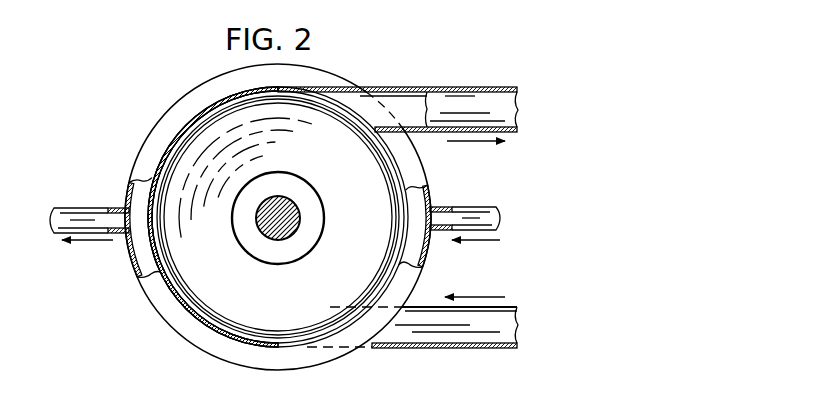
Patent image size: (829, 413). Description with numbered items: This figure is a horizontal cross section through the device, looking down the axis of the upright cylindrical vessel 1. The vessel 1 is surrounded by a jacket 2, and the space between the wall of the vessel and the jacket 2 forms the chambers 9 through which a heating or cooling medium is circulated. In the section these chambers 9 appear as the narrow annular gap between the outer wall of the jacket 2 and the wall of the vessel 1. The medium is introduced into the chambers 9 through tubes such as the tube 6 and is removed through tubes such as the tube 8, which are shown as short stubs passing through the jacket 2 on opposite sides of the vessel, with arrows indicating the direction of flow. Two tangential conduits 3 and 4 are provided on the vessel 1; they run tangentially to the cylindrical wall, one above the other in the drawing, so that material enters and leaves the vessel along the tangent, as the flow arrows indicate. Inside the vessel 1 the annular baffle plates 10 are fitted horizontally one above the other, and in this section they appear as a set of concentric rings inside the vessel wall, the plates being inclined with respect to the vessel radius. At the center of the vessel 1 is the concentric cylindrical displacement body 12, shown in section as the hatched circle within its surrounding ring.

The upright cylindrical vessel 1 is at (182, 128).
The jacket 2 is at (134, 256).
The tangential conduit 3 is at (412, 336).
The tangential conduit 4 is at (468, 102).
The tube 6 is at (480, 212).
The tube 8 is at (78, 216).
The chamber 9 is at (416, 250).
The annular baffle plate 10 is at (210, 322).
The concentric cylindrical displacement body 12 is at (294, 236).